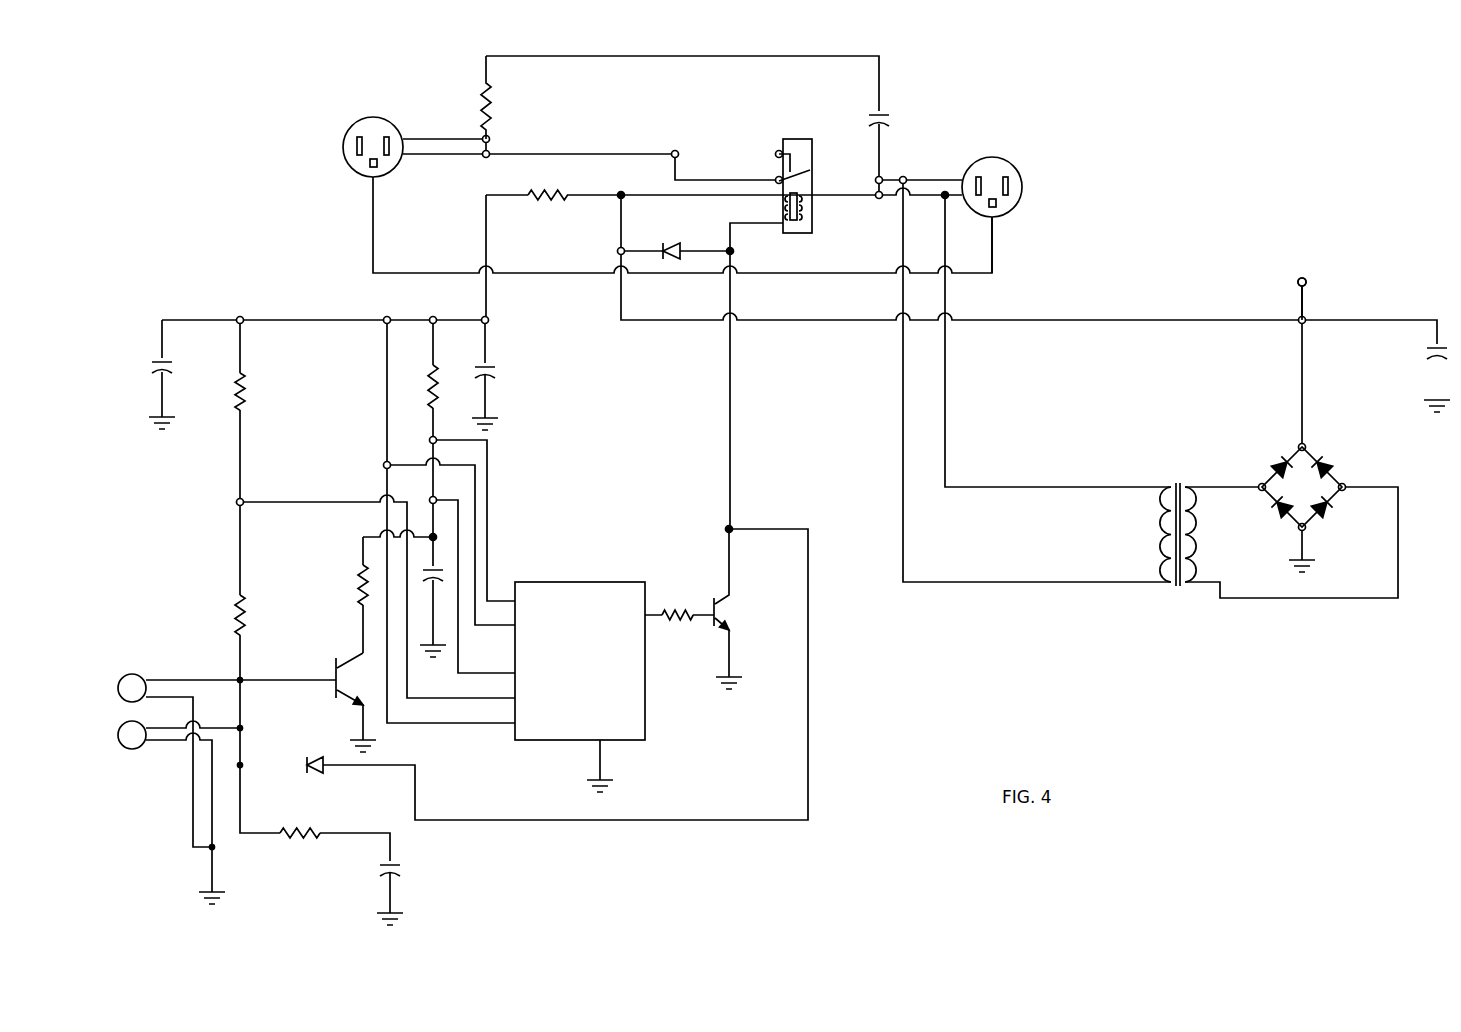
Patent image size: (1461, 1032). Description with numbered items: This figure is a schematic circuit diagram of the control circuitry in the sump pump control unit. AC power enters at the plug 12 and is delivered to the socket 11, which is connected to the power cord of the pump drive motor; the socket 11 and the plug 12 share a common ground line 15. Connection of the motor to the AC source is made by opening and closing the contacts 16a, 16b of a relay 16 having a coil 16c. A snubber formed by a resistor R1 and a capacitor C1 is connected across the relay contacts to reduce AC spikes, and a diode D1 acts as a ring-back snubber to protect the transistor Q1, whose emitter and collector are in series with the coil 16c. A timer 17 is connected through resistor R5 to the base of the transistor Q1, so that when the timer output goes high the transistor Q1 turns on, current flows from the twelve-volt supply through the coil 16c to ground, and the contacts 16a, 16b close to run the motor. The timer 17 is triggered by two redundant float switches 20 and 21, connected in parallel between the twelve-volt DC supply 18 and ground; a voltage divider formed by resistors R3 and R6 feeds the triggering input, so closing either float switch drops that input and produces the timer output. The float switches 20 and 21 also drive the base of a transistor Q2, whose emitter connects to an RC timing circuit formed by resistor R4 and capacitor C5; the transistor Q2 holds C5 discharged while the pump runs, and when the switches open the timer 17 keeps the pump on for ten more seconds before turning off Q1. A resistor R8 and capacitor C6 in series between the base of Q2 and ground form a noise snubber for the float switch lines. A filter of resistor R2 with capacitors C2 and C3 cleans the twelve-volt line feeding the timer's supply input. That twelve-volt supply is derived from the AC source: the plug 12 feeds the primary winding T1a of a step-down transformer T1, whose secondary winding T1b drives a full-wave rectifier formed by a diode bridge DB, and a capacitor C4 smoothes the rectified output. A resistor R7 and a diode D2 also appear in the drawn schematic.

The socket 11 is at (366, 117).
The plug 12 is at (994, 157).
The common ground line 15 is at (992, 240).
The relay 16 is at (785, 177).
The relay contact 16a is at (795, 172).
The relay contact 16b is at (802, 182).
The relay coil 16c is at (800, 215).
The timer 17 is at (627, 582).
The 12-volt DC voltage supply 18 is at (1304, 301).
The float switch 20 is at (136, 674).
The float switch 21 is at (136, 750).
The resistor R1 is at (482, 105).
The resistor R2 is at (554, 201).
The resistor R3 is at (243, 404).
The resistor R4 is at (432, 400).
The resistor R5 is at (683, 607).
The resistor R6 is at (246, 623).
The resistor R7 is at (358, 580).
The resistor R8 is at (313, 827).
The capacitor C1 is at (889, 125).
The capacitor C2 is at (167, 367).
The capacitor C3 is at (491, 367).
The capacitor C4 is at (1419, 350).
The capacitor C5 is at (428, 577).
The capacitor C6 is at (392, 862).
The diode D1 is at (662, 246).
The diode D2 is at (307, 760).
The transistor Q1 is at (716, 601).
The transistor Q2 is at (335, 665).
The step-down transformer T1 is at (1178, 509).
The primary winding T1a is at (1162, 532).
The secondary winding T1b is at (1194, 532).
The diode bridge DB is at (1320, 447).